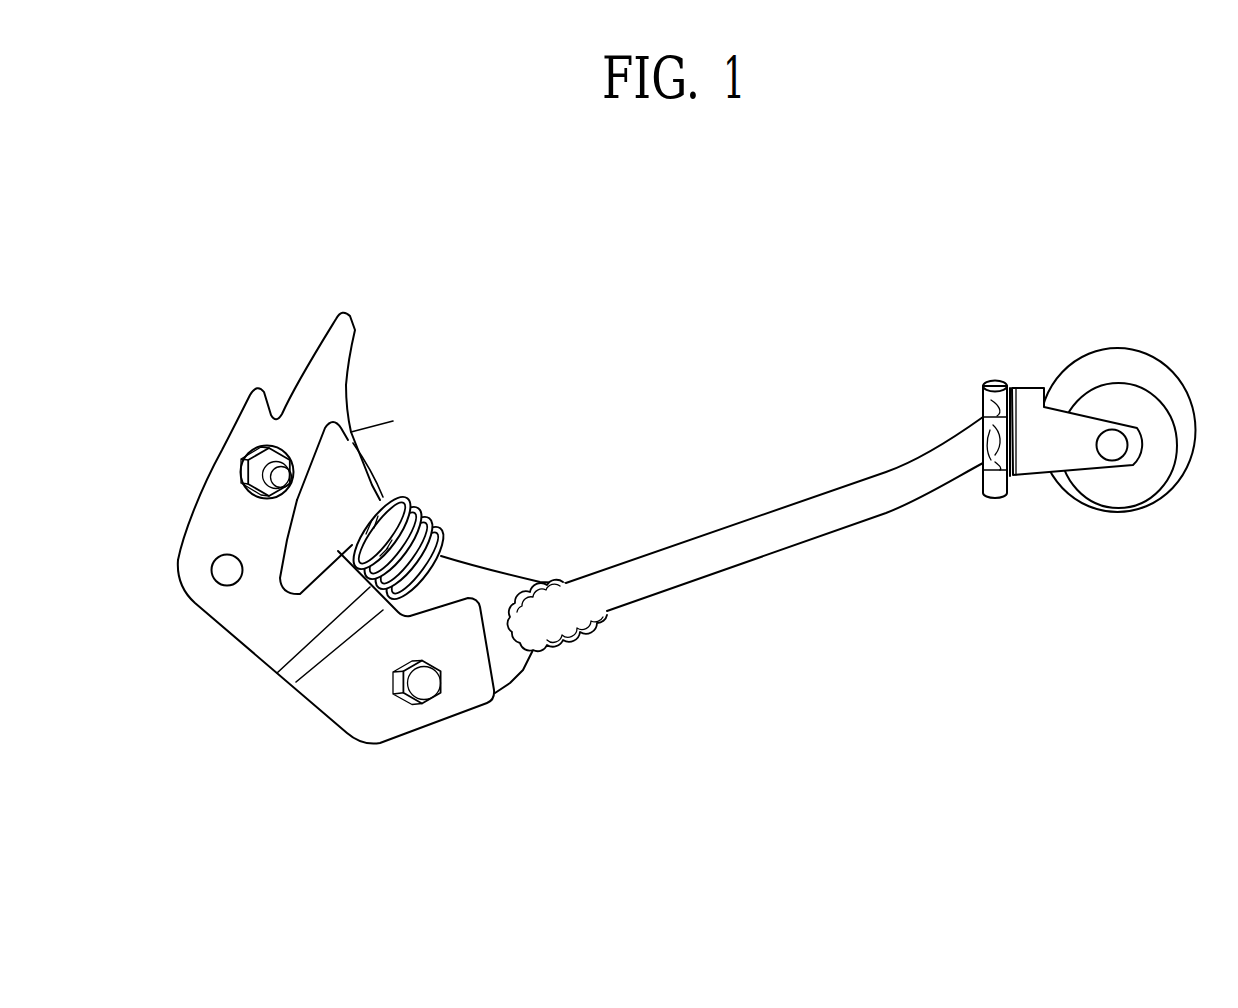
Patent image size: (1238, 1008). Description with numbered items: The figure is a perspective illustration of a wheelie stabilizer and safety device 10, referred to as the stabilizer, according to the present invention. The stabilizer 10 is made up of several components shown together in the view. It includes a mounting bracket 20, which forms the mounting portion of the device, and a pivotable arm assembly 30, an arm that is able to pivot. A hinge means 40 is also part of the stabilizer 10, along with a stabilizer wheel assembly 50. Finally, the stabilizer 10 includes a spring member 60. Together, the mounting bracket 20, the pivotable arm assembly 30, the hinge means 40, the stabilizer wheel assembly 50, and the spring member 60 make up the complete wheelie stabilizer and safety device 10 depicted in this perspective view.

The wheelie stabilizer and safety device 10 is at (732, 898).
The mounting bracket 20 is at (370, 427).
The pivotable arm assembly 30 is at (728, 570).
The hinge means 40 is at (988, 380).
The stabilizer wheel assembly 50 is at (1120, 513).
The spring member 60 is at (431, 523).